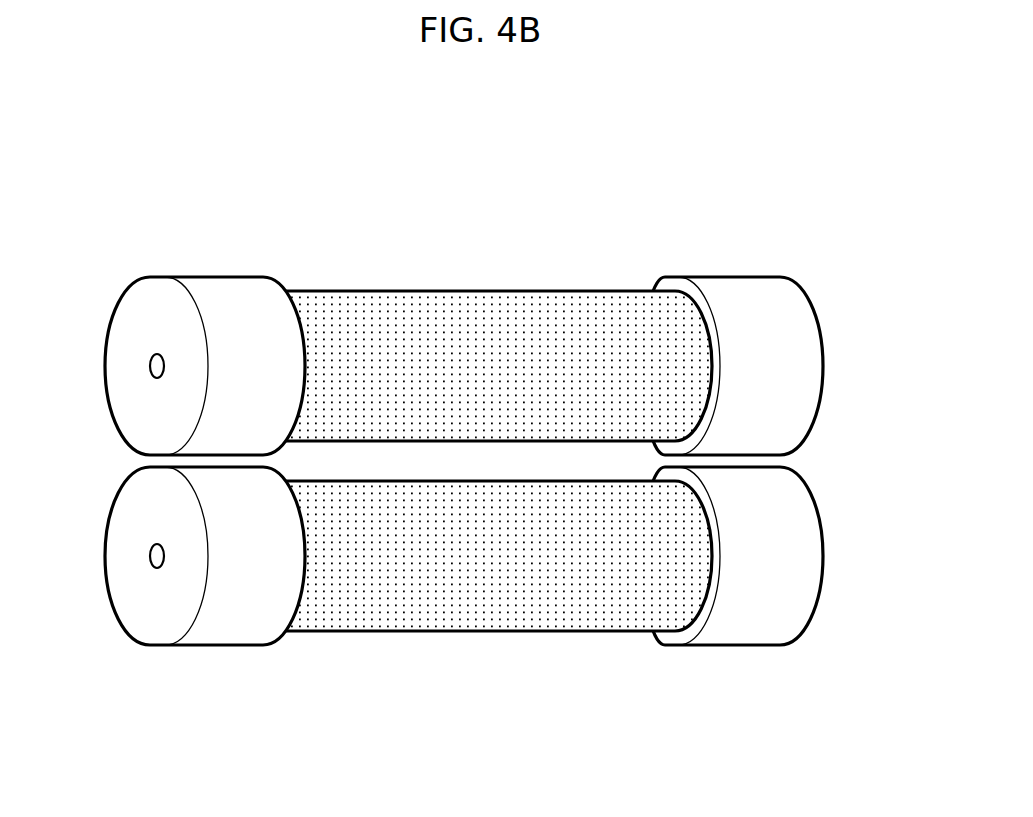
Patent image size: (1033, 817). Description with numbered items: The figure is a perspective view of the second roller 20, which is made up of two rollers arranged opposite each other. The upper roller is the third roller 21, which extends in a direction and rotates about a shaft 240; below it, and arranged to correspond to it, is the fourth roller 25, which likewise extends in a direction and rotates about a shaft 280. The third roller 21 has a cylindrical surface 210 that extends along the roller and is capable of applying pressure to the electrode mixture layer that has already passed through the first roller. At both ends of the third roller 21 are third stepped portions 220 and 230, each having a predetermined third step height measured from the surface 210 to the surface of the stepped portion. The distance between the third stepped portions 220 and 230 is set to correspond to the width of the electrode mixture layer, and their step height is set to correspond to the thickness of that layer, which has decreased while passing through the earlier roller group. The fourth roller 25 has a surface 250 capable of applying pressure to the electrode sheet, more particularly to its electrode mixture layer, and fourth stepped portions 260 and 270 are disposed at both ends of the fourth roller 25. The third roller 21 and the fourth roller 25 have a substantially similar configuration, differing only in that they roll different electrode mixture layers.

The second roller 20 is at (808, 200).
The third roller 21 is at (843, 353).
The fourth roller 25 is at (843, 545).
The surface 210 is at (364, 287).
The third stepped portion 220 is at (729, 287).
The third stepped portion 230 is at (215, 283).
The shaft 240 is at (150, 366).
The surface 250 is at (580, 645).
The fourth stepped portion 260 is at (738, 642).
The fourth stepped portion 270 is at (220, 640).
The shaft 280 is at (150, 556).